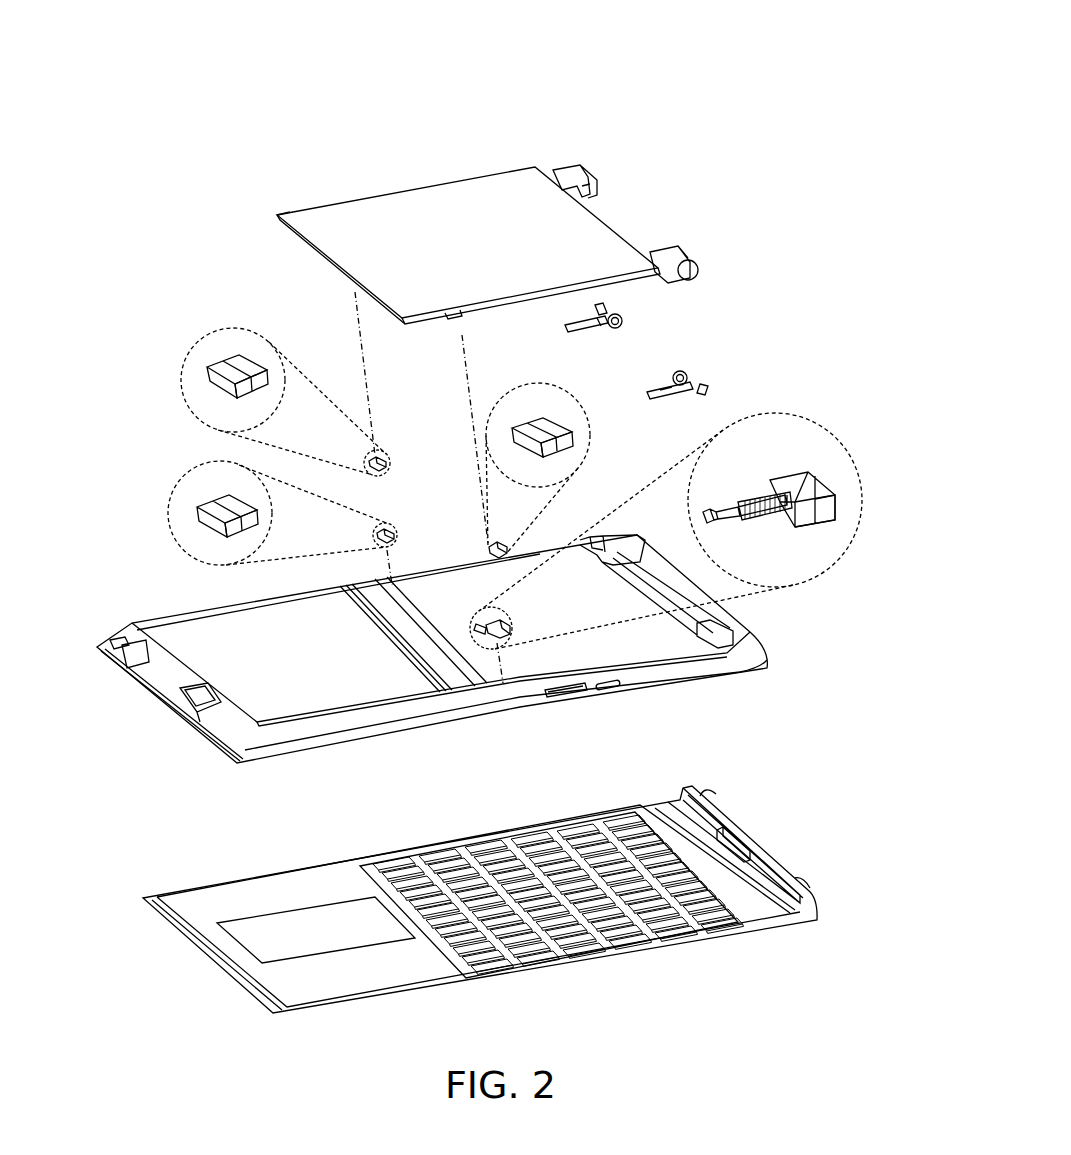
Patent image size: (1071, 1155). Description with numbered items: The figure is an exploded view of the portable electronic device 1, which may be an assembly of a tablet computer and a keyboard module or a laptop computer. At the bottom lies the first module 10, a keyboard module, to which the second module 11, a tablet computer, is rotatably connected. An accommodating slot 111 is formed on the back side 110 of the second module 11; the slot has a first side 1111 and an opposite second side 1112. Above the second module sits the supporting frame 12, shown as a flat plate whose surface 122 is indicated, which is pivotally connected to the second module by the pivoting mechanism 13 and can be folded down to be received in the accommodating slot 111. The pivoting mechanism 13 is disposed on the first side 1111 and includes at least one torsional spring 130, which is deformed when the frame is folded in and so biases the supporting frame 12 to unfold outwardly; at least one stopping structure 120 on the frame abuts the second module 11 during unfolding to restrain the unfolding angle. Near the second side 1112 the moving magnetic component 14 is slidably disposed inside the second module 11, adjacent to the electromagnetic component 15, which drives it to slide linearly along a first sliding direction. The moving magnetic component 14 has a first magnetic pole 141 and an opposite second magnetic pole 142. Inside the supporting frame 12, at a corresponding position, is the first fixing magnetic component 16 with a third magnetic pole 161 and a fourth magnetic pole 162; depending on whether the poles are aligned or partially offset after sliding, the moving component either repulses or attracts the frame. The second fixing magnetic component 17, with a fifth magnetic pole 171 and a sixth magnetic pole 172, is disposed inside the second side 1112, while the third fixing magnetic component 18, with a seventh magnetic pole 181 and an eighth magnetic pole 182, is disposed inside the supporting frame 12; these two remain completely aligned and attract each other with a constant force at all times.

The portable electronic device 1 is at (666, 70).
The first module 10 is at (193, 971).
The second module 11 is at (443, 618).
The back side 110 is at (317, 668).
The accommodating slot 111 is at (582, 625).
The first side 1111 is at (629, 585).
The second side 1112 is at (431, 607).
The supporting frame 12 is at (518, 204).
The stopping structure 120 is at (590, 174).
The cover plate surface 122 is at (297, 216).
The pivoting mechanism 13 is at (674, 341).
The torsional spring 130 is at (783, 350).
The moving magnetic component 14 is at (632, 572).
The first magnetic pole 141 is at (797, 530).
The second magnetic pole 142 is at (800, 480).
The electromagnetic component 15 is at (757, 503).
The first fixing magnetic component 16 is at (548, 446).
The third magnetic pole 161 is at (523, 420).
The fourth magnetic pole 162 is at (553, 416).
The second fixing magnetic component 17 is at (283, 507).
The fifth magnetic pole 171 is at (212, 526).
The sixth magnetic pole 172 is at (246, 506).
The third fixing magnetic component 18 is at (274, 382).
The seventh magnetic pole 181 is at (212, 377).
The eighth magnetic pole 182 is at (262, 369).